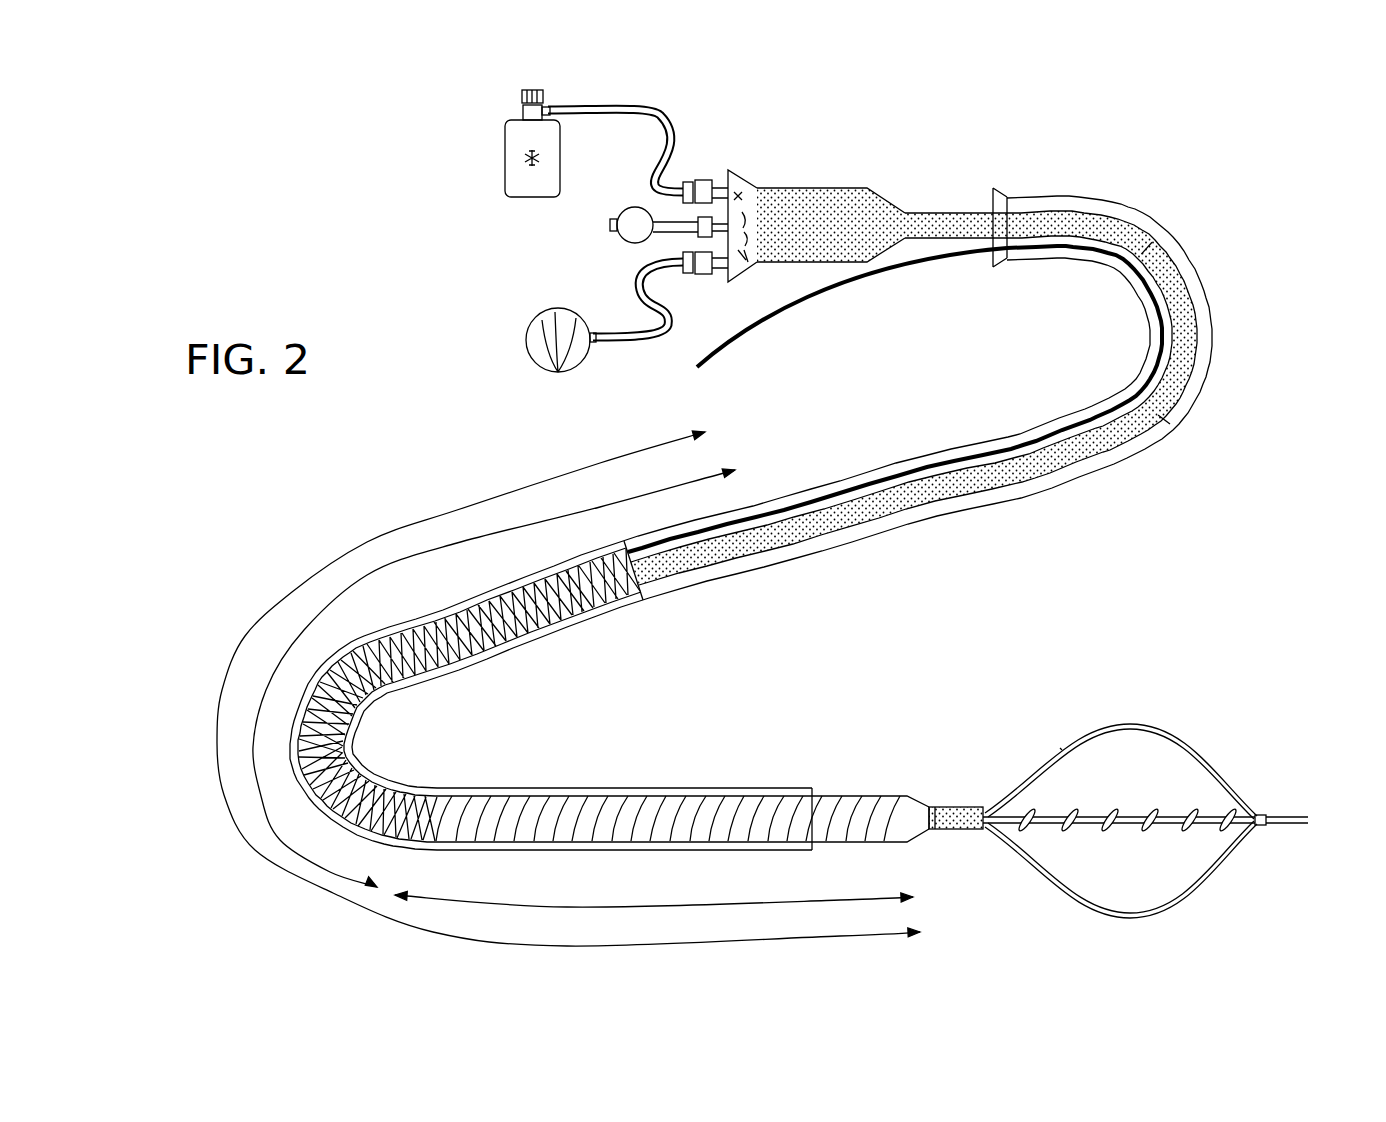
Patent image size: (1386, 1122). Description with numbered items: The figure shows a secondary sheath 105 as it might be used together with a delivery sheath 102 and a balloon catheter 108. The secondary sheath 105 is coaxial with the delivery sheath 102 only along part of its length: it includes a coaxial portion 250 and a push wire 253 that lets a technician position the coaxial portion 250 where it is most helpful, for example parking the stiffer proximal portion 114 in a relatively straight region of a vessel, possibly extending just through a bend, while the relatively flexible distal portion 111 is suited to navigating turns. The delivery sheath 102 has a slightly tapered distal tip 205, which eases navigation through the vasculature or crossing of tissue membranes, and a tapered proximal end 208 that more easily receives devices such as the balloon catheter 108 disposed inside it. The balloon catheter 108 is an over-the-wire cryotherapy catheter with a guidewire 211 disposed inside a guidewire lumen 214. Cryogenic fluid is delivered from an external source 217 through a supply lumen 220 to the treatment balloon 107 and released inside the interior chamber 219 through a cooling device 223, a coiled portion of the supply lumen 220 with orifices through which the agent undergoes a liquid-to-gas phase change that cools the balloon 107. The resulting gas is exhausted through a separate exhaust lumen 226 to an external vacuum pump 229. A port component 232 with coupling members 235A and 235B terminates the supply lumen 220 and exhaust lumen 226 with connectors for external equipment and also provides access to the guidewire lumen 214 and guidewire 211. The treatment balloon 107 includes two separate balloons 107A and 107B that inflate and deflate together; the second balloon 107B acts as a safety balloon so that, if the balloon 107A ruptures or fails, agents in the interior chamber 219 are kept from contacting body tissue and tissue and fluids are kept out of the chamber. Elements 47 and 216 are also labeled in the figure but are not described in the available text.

The distal portion of inner shaft 47 is at (913, 795).
The delivery sheath 102 is at (1107, 208).
The secondary sheath 105 is at (1146, 249).
The treatment balloon 107 is at (1159, 755).
The balloon 107A is at (1206, 764).
The safety balloon 107B is at (1165, 726).
The balloon catheter 108 is at (1164, 420).
The flexible distal portion 111 is at (553, 910).
The stiffer proximal portion 114 is at (457, 543).
The distal tip 205 is at (812, 785).
The proximal end 208 is at (1005, 182).
The guidewire 211 is at (1305, 817).
The guidewire lumen 214 is at (748, 228).
The syringe 216 is at (618, 243).
The external source 217 is at (505, 183).
The interior chamber 219 is at (1133, 883).
The supply lumen 220 is at (738, 196).
The cooling device 223 is at (1170, 800).
The exhaust lumen 226 is at (747, 255).
The external vacuum pump 229 is at (585, 366).
The port component 232 is at (830, 270).
The coupling member 235A is at (688, 181).
The coupling member 235B is at (686, 272).
The coaxial portion 250 is at (245, 636).
The push wire 253 is at (913, 263).